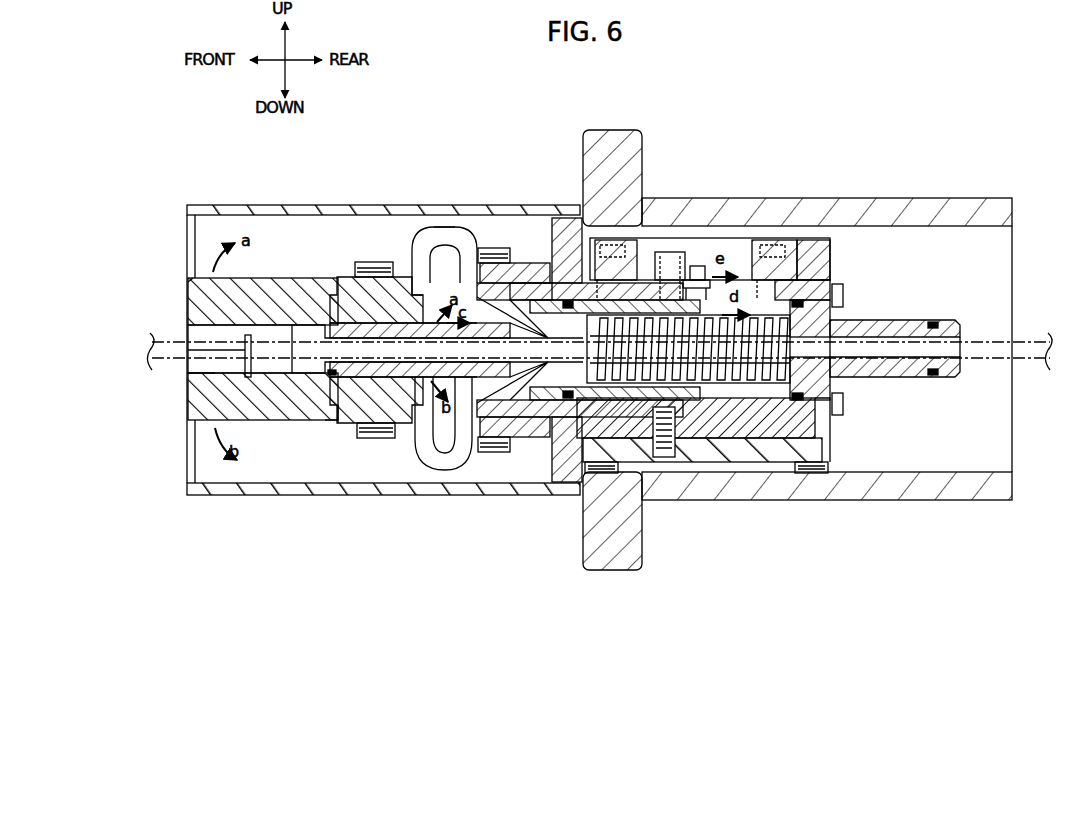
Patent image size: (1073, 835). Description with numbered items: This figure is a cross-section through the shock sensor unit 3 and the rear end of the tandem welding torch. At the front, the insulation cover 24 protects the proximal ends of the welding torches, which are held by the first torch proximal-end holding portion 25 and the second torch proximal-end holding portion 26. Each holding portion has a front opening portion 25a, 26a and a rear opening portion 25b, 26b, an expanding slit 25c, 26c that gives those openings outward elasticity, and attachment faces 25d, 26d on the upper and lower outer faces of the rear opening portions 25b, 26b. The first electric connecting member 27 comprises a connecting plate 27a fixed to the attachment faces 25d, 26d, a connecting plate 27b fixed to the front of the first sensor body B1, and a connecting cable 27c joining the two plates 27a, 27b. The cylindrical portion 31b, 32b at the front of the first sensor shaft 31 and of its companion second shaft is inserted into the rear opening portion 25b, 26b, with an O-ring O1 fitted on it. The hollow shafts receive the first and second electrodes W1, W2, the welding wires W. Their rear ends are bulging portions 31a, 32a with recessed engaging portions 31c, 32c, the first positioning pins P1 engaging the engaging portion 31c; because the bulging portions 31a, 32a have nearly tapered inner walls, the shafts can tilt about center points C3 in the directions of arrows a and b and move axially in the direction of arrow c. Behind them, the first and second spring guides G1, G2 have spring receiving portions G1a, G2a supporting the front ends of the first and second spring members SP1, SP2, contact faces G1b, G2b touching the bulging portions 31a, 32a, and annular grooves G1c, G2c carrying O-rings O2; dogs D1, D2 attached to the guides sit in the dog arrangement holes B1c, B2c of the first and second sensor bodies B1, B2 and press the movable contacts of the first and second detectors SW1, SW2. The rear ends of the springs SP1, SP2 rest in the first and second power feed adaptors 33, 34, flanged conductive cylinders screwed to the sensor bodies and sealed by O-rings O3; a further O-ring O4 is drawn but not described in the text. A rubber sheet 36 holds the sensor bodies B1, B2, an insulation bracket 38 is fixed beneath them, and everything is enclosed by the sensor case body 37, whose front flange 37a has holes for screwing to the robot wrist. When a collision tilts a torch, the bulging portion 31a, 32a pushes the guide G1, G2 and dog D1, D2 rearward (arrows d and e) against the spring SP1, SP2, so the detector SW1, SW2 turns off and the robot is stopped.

The shock sensor unit 3 is at (846, 117).
The insulation cover 24 is at (228, 205).
The first torch proximal-end holding portion 25 is at (262, 368).
The second torch proximal-end holding portion 26 is at (270, 278).
The front opening portion 25a is at (155, 301).
The front opening portion 26a is at (192, 322).
The rear opening portion 25b is at (372, 493).
The rear opening portion 26b is at (392, 423).
The expanding slit 25c is at (168, 397).
The expanding slit 26c is at (215, 385).
The attachment face 25d is at (298, 500).
The attachment face 26d is at (338, 420).
The first electric connecting member 27 is at (414, 226).
The connecting plate 27a is at (410, 265).
The connecting plate 27b is at (440, 227).
The connecting cable 27c is at (496, 263).
The first sensor shaft 31 is at (405, 425).
The bulging portion 31a is at (515, 433).
The bulging portion 32a is at (500, 418).
The cylindrical portion 31b is at (343, 407).
The cylindrical portion 32b is at (372, 438).
The engaging portion 31c is at (442, 457).
The engaging portion 32c is at (452, 452).
The first power feed adaptor 33 is at (895, 267).
The second power feed adaptor 34 is at (881, 322).
The rubber sheet 36 is at (808, 242).
The sensor case body 37 is at (989, 195).
The flange 37a is at (612, 130).
The insulation bracket 38 is at (832, 452).
The first positioning pin P1 is at (482, 248).
The first sensor body B1 is at (555, 319).
The second sensor body B2 is at (565, 218).
The dog arrangement hole B1c is at (710, 228).
The dog arrangement hole B2c is at (778, 242).
The center point C3 is at (535, 283).
The first detector SW1 is at (692, 228).
The second detector SW2 is at (672, 252).
The dog D1 is at (730, 214).
The dog D2 is at (702, 266).
The first spring guide G1 is at (688, 451).
The second spring guide G2 is at (725, 385).
The spring receiving portion G1a is at (696, 476).
The spring receiving portion G2a is at (695, 462).
The contact face G1b is at (706, 534).
The contact face G2b is at (600, 470).
The annular groove G1c is at (679, 523).
The annular groove G2c is at (595, 462).
The first spring member SP1 is at (740, 483).
The second spring member SP2 is at (760, 430).
The O-ring O1 is at (330, 418).
The O-ring O2 is at (563, 400).
The O-ring O3 is at (802, 398).
The O-ring O4 is at (933, 378).
The welding wire W is at (599, 316).
The first electrode W1 is at (599, 316).
The second electrode W2 is at (995, 342).